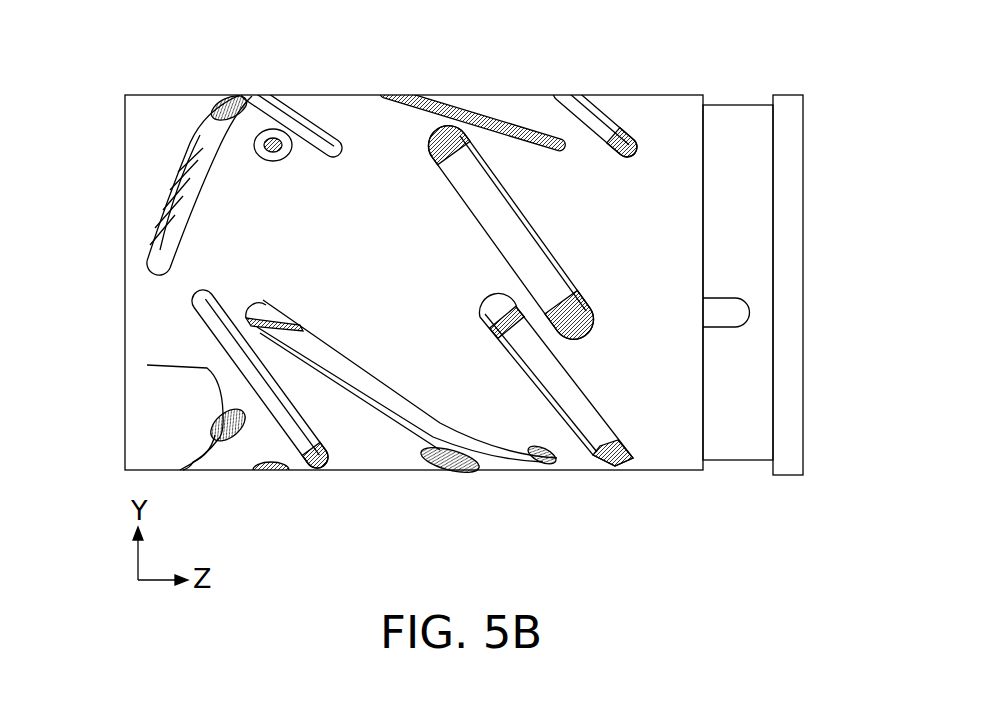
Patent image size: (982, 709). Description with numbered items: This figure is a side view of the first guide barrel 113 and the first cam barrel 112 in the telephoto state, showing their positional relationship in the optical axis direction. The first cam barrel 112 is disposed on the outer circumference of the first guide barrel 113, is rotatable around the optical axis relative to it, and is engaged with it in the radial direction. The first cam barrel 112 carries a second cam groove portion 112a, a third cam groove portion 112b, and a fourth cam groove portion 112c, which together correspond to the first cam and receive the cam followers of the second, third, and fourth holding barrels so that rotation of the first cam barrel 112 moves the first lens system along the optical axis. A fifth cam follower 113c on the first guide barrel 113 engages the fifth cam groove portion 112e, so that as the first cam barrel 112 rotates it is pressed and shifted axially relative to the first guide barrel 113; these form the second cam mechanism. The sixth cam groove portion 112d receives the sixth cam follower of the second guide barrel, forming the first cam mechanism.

The first cam barrel 112 is at (638, 108).
The second cam groove portion 112a is at (340, 455).
The third cam groove portion 112b is at (580, 480).
The fourth cam groove portion 112c is at (628, 450).
The sixth cam groove portion 112d is at (557, 253).
The fifth cam groove portion 112e is at (207, 437).
The first guide barrel 113 is at (787, 220).
The fifth cam follower 113c is at (147, 365).